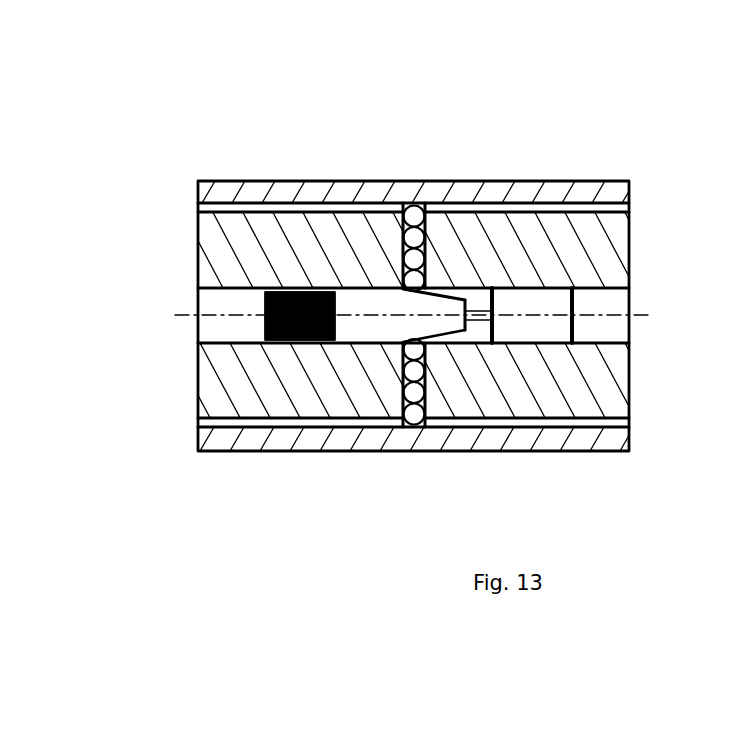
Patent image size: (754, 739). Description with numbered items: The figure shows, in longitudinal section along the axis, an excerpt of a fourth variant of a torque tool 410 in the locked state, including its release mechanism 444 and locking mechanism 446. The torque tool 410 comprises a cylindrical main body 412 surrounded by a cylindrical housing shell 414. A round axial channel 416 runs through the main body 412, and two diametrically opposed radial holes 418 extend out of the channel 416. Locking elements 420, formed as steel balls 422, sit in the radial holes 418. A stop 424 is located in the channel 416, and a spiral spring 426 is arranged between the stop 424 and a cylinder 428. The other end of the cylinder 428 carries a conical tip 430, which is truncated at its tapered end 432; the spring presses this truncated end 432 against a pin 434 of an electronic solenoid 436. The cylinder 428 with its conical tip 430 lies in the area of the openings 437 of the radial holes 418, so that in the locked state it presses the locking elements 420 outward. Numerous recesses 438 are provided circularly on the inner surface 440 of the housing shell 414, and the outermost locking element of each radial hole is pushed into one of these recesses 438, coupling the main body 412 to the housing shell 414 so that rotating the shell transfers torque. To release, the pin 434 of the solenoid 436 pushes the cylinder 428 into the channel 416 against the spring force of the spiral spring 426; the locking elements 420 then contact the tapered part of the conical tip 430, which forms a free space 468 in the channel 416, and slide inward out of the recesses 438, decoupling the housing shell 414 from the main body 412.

The torque tool 410 is at (575, 120).
The cylindrical main body 412 is at (210, 397).
The cylindrical housing shell 414 is at (233, 442).
The round axial channel 416 is at (210, 288).
The radial holes 418 is at (401, 286).
The locking elements 420 is at (437, 288).
The steel balls 422 is at (420, 300).
The stop 424 is at (265, 292).
The spiral spring 426 is at (285, 340).
The cylinder 428 is at (372, 330).
The conical tip 430 is at (476, 288).
The tapered end 432 is at (449, 350).
The pin 434 is at (493, 313).
The electronic solenoid 436 is at (558, 302).
The openings 437 is at (402, 249).
The recesses 438 is at (437, 230).
The inner surface 440 is at (402, 287).
The release mechanism 444 is at (462, 365).
The locking mechanism 446 is at (450, 288).
The free space 468 is at (438, 231).